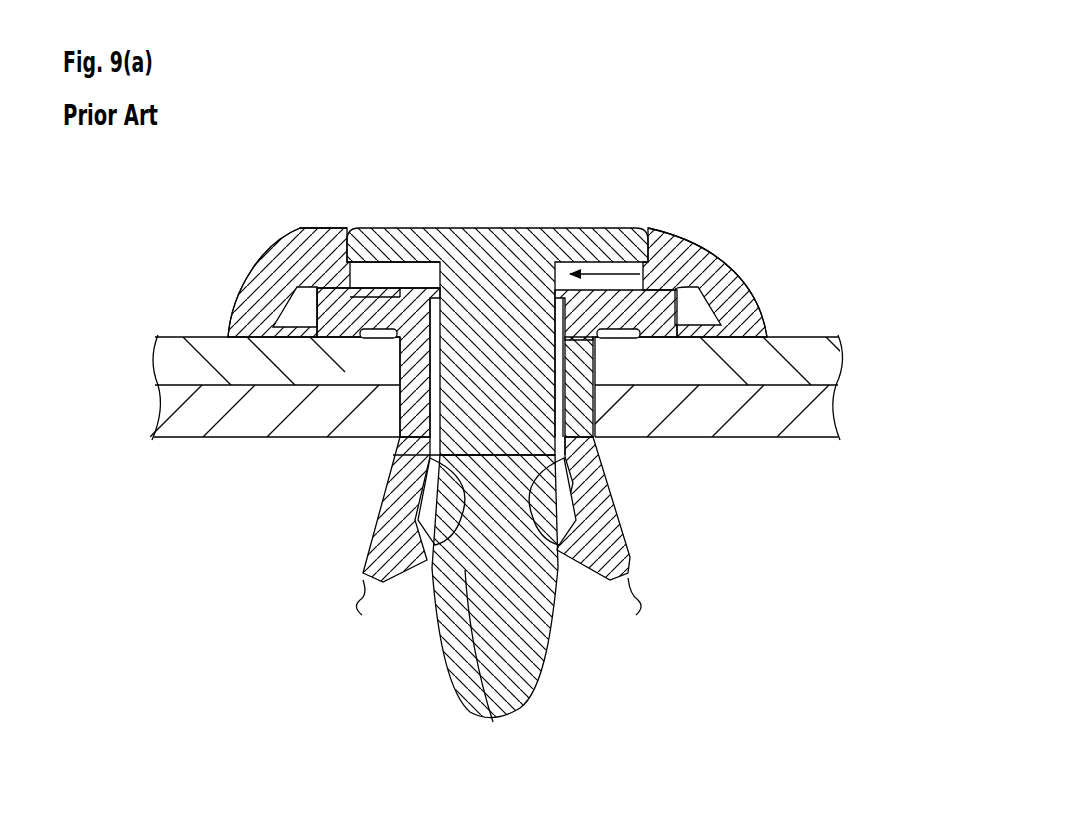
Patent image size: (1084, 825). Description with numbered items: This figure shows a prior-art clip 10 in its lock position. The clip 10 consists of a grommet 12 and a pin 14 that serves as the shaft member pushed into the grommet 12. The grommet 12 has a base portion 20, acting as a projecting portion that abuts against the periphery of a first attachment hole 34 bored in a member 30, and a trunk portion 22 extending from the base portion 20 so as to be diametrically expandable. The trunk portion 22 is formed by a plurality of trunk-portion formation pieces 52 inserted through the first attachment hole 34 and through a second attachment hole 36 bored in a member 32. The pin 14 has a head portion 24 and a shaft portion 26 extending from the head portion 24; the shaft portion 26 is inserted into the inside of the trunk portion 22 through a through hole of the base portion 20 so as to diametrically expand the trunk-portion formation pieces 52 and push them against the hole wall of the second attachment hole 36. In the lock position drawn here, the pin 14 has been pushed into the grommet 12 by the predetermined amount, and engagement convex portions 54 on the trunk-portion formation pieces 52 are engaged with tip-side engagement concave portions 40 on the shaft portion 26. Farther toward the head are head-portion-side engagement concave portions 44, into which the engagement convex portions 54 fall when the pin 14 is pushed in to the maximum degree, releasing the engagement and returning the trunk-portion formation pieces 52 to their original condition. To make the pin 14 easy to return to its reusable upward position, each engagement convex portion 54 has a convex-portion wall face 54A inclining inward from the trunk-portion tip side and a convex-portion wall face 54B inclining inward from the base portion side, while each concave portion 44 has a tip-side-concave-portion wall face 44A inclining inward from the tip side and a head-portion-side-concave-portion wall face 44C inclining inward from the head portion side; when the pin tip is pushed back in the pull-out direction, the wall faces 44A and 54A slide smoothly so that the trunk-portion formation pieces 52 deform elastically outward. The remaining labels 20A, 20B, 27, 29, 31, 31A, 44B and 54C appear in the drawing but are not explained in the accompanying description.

The clip 10 is at (827, 95).
The grommet 12 is at (543, 397).
The pin 14 is at (497, 435).
The base portion 20 is at (742, 262).
The trunk portion 22 is at (602, 452).
The head portion 24 is at (589, 226).
The shaft portion 26 is at (680, 268).
The shaft portion 20A is at (357, 312).
The annular groove 20B is at (674, 228).
The pin head recess 27 is at (497, 289).
The grommet bore 29 is at (509, 373).
The member 30 is at (163, 335).
The gap 31 is at (376, 278).
The gap portion 31A is at (402, 290).
The member 32 is at (178, 441).
The first attachment hole 34 is at (407, 367).
The second attachment hole 36 is at (403, 421).
The tip-side engagement concave portion 40 is at (398, 583).
The head-portion-side engagement concave portion 44 is at (370, 540).
The tip-side-concave-portion wall face 44A is at (410, 495).
The pin expanded portion 44B is at (495, 588).
The head-portion-side-concave-portion wall face 44C is at (433, 455).
The trunk-portion formation piece 52 is at (372, 522).
The engagement convex portion 54 is at (372, 580).
The convex-portion wall face 54A is at (398, 578).
The convex-portion wall face 54B is at (568, 520).
The tip side surface 54C is at (438, 635).